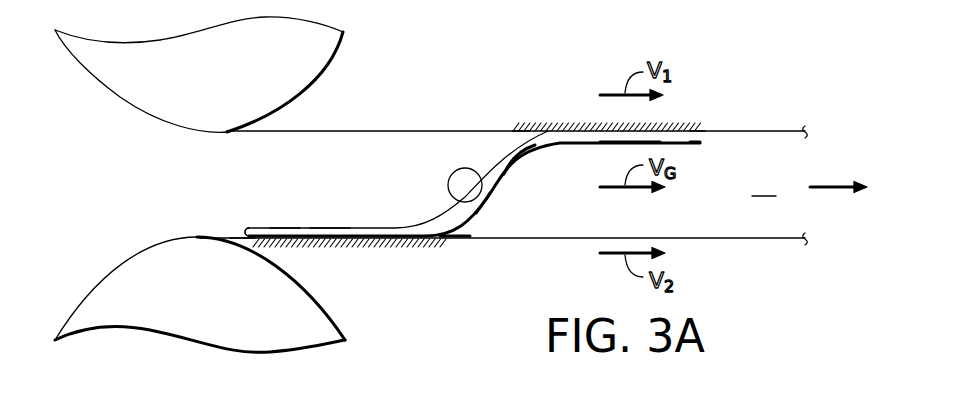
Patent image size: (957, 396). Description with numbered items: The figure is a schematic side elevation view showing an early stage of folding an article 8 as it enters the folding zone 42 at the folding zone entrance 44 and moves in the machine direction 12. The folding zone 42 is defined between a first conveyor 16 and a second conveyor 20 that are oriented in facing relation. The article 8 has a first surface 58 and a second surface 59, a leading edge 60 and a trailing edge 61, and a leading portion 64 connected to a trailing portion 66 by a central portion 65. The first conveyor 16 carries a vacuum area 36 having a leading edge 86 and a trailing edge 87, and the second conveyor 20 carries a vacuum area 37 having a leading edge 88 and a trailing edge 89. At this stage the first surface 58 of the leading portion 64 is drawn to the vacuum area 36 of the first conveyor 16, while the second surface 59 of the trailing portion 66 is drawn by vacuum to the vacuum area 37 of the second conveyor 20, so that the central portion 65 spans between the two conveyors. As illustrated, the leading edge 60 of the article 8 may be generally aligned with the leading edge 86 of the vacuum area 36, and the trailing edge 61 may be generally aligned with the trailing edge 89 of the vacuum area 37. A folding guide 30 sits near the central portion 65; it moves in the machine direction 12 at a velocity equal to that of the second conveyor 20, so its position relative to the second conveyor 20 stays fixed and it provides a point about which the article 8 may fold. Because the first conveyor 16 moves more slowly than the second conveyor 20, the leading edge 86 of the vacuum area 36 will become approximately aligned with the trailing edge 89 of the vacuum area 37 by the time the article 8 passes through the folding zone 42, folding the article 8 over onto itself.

The article 8 is at (283, 227).
The machine direction 12 is at (822, 185).
The first conveyor 16 is at (317, 130).
The second conveyor 20 is at (733, 238).
The folding guide 30 is at (462, 182).
The vacuum area of the first conveyor 36 is at (523, 116).
The vacuum area of the second conveyor 37 is at (373, 255).
The folding zone 42 is at (763, 185).
The folding zone entrance 44 is at (145, 189).
The first surface 58 is at (367, 226).
The second surface 59 is at (495, 203).
The leading edge 60 is at (701, 141).
The trailing edge 61 is at (247, 231).
The leading portion 64 is at (627, 145).
The central portion 65 is at (517, 180).
The trailing portion 66 is at (328, 227).
The leading edge of the vacuum area 86 is at (714, 114).
The trailing edge of the vacuum area 87 is at (501, 121).
The leading edge of the vacuum area 88 is at (472, 232).
The trailing edge of the vacuum area 89 is at (242, 250).